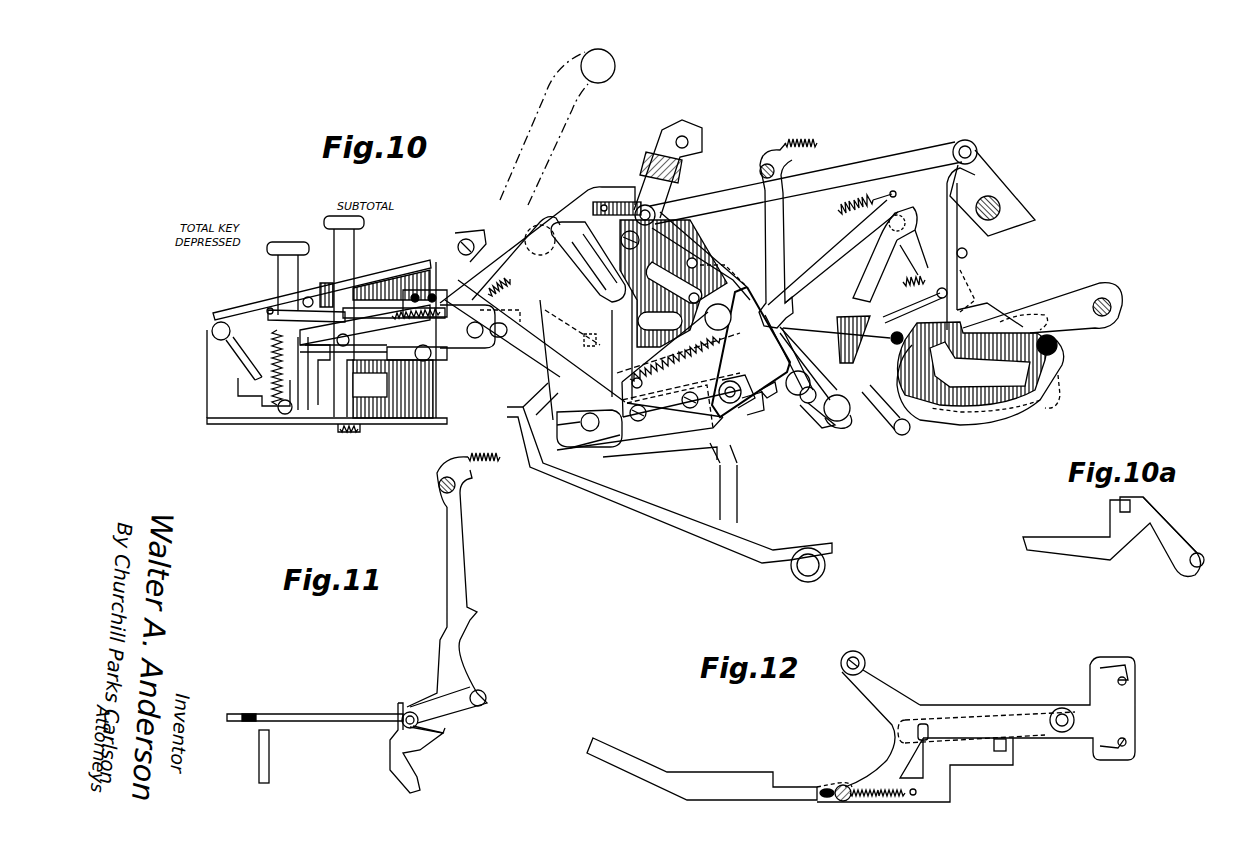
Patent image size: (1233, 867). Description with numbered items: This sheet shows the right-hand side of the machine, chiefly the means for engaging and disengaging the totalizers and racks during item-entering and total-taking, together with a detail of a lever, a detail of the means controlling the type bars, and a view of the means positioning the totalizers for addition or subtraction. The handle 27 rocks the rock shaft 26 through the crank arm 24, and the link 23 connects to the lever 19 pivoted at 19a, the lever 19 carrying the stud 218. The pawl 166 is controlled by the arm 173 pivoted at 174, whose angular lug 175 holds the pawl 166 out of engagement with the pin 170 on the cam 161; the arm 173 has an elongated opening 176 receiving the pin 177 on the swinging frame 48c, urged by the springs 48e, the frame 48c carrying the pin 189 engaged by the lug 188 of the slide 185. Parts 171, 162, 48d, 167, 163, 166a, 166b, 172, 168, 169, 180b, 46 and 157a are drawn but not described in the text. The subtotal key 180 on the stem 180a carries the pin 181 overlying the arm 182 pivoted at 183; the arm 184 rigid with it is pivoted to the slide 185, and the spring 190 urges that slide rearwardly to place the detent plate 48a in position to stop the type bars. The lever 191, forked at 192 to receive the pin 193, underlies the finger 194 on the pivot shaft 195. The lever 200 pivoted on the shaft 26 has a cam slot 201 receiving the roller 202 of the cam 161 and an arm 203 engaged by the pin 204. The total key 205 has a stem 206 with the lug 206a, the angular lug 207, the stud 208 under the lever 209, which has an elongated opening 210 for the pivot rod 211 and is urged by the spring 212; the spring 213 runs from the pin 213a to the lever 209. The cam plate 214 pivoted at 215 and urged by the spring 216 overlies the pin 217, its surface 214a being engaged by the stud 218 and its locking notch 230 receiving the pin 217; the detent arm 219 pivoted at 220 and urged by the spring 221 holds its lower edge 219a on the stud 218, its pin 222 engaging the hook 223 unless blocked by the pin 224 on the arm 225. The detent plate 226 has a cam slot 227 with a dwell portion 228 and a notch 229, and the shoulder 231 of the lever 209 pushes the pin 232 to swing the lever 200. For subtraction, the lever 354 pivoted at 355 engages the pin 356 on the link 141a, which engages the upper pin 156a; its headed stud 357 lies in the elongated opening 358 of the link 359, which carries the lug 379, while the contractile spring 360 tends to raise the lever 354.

In FIG. 10, the handle 27 is at (583, 88).
In FIG. 10, the block 171 is at (606, 202).
In FIG. 10, the lever 162 is at (640, 238).
In FIG. 10, the lever 19 is at (1020, 200).
In FIG. 10, the pivot 19a is at (985, 197).
In FIG. 10, the swinging frame 48c is at (780, 210).
In FIG. 11, the swinging frame 48c is at (460, 570).
In FIG. 10, the stud 48d is at (775, 171).
In FIG. 11, the stud 48d is at (458, 490).
In FIG. 10, the spring 48e is at (812, 140).
In FIG. 11, the spring 48e is at (482, 462).
In FIG. 10, the contractile spring 221 is at (850, 212).
In FIG. 10, the pivot 215 is at (905, 300).
In FIG. 10, the pin 224 is at (905, 236).
In FIG. 10, the arm 225 is at (903, 248).
In FIG. 10, the pin 222 is at (956, 255).
In FIG. 10, the contractile spring 216 is at (911, 276).
In FIG. 10, the detent arm 219 is at (968, 252).
In FIG. 10, the hook 223 is at (968, 268).
In FIG. 10, the lower edge 219a is at (1040, 320).
In FIG. 10, the pivot 220 is at (1106, 297).
In FIG. 10, the stud 218 is at (1060, 344).
In FIG. 10, the cam plate 214 is at (1010, 408).
In FIG. 10, the surface 214a is at (972, 364).
In FIG. 10, the cam slot 227 is at (957, 353).
In FIG. 10, the dwell portion 228 is at (1007, 353).
In FIG. 10, the notch 229 is at (926, 383).
In FIG. 10, the detent plate 226 is at (1060, 372).
In FIG. 10, the locking notch 230 is at (870, 339).
In FIG. 10, the pin 217 is at (903, 437).
In FIG. 10, the arm 173 is at (786, 314).
In FIG. 10, the elongated opening 176 is at (798, 410).
In FIG. 10, the pivot 174 is at (830, 420).
In FIG. 10, the pin 177 is at (780, 399).
In FIG. 11, the pin 177 is at (486, 693).
In FIG. 10, the link 23 is at (721, 314).
In FIG. 10, the lug 188 is at (737, 383).
In FIG. 11, the lug 188 is at (405, 702).
In FIG. 10, the pin 189 is at (752, 414).
In FIG. 11, the pin 189 is at (420, 745).
In FIG. 10, the cam 161 is at (708, 240).
In FIG. 10, the pin 170 is at (708, 255).
In FIG. 10, the angular lug 175 is at (712, 268).
In FIG. 10, the pawl 166 is at (702, 280).
In FIG. 10, the pivot 167 is at (712, 302).
In FIG. 10, the link 163 is at (671, 284).
In FIG. 10, the slot 166b is at (660, 322).
In FIG. 10, the stud 166a is at (676, 261).
In FIG. 10, the hatched block 172 is at (669, 283).
In FIG. 10, the cam slot 201 is at (586, 321).
In FIG. 10, the pin 232 is at (592, 333).
In FIG. 10, the lever 200 is at (528, 315).
In FIG. 10, the contractile spring 212 is at (500, 290).
In FIG. 10, the arm 184 is at (467, 326).
In FIG. 10, the elongated opening 210 is at (507, 333).
In FIG. 10, the pivot rod 211 is at (509, 337).
In FIG. 10, the lever 209 is at (268, 315).
In FIG. 10, the slide 185 is at (508, 408).
In FIG. 10, the plate 168 is at (614, 372).
In FIG. 10, the shoulder 231 is at (612, 350).
In FIG. 10, the spring 169 is at (675, 363).
In FIG. 10, the rock shaft 26 is at (589, 428).
In FIG. 10, the pin 204 is at (640, 417).
In FIG. 10, the arm 203 is at (672, 445).
In FIG. 10, the crank arm 24 is at (600, 451).
In FIG. 10, the roller 202 is at (540, 218).
In FIG. 10, the pivot shaft 195 is at (212, 330).
In FIG. 10, the finger 194 is at (226, 345).
In FIG. 10, the total key 205 is at (272, 255).
In FIG. 10, the stem 206 is at (278, 277).
In FIG. 10, the subtotal key 180 is at (364, 224).
In FIG. 10, the stem 180a is at (356, 250).
In FIG. 10, the key stem end 180b is at (352, 435).
In FIG. 10, the spring 190 is at (376, 285).
In FIG. 10, the lever 191 is at (366, 285).
In FIG. 10A, the lever 191 is at (1160, 515).
In FIG. 10, the pin 193 is at (312, 296).
In FIG. 10, the pin 213a is at (278, 412).
In FIG. 10, the lug 206a is at (240, 392).
In FIG. 10, the stud 208 is at (313, 373).
In FIG. 10, the contractile spring 213 is at (315, 375).
In FIG. 10, the pin 181 is at (373, 325).
In FIG. 10, the arm 182 is at (393, 389).
In FIG. 10, the pivot 183 is at (416, 377).
In FIG. 10A, the pivot 183 is at (1188, 565).
In FIG. 10, the angular lug 207 is at (370, 385).
In FIG. 10A, the fork 192 is at (1112, 506).
In FIG. 11, the detent plate 48a is at (250, 714).
In FIG. 11, the bar 46 is at (280, 755).
In FIG. 12, the link 359 is at (722, 780).
In FIG. 12, the lever 354 is at (888, 695).
In FIG. 12, the pivot 355 is at (866, 660).
In FIG. 12, the link 141a is at (1092, 695).
In FIG. 12, the upper pin 156a is at (1128, 677).
In FIG. 12, the slot 157a is at (1130, 741).
In FIG. 12, the pin 356 is at (1062, 732).
In FIG. 12, the lug 379 is at (1000, 752).
In FIG. 12, the headed stud 357 is at (847, 784).
In FIG. 12, the elongated opening 358 is at (825, 798).
In FIG. 12, the contractile spring 360 is at (893, 798).